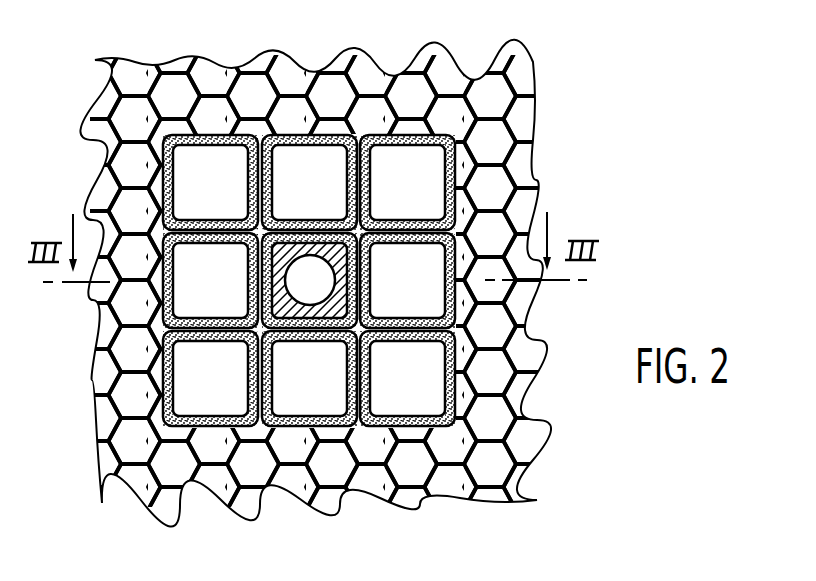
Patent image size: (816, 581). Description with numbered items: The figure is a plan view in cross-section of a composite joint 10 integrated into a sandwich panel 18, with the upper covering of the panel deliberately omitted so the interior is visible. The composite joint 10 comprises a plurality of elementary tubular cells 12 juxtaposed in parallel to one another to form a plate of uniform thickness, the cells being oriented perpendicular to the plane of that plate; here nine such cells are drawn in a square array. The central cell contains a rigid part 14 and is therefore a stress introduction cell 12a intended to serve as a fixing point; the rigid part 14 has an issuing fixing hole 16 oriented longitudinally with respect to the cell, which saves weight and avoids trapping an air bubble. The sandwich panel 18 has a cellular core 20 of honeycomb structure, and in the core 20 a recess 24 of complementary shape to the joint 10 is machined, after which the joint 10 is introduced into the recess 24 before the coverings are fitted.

The composite joint 10 is at (472, 152).
The elementary tubular cells 12 is at (376, 118).
The stress introduction cell 12a is at (248, 291).
The rigid part 14 is at (367, 290).
The fixing hole 16 is at (308, 262).
The sandwich panel 18 is at (86, 468).
The cellular core 20 is at (253, 468).
The recess 24 is at (290, 427).